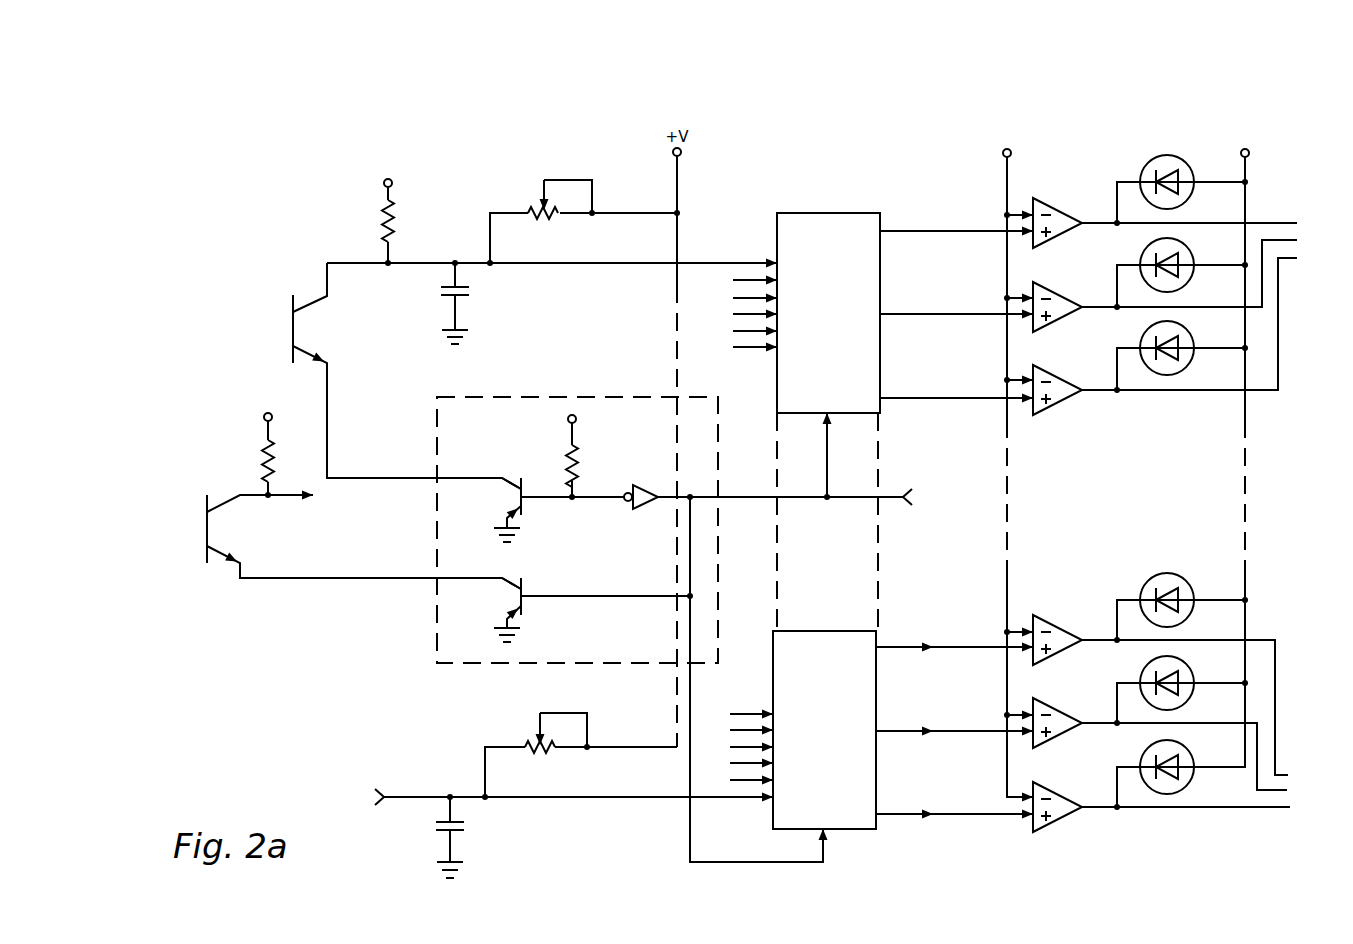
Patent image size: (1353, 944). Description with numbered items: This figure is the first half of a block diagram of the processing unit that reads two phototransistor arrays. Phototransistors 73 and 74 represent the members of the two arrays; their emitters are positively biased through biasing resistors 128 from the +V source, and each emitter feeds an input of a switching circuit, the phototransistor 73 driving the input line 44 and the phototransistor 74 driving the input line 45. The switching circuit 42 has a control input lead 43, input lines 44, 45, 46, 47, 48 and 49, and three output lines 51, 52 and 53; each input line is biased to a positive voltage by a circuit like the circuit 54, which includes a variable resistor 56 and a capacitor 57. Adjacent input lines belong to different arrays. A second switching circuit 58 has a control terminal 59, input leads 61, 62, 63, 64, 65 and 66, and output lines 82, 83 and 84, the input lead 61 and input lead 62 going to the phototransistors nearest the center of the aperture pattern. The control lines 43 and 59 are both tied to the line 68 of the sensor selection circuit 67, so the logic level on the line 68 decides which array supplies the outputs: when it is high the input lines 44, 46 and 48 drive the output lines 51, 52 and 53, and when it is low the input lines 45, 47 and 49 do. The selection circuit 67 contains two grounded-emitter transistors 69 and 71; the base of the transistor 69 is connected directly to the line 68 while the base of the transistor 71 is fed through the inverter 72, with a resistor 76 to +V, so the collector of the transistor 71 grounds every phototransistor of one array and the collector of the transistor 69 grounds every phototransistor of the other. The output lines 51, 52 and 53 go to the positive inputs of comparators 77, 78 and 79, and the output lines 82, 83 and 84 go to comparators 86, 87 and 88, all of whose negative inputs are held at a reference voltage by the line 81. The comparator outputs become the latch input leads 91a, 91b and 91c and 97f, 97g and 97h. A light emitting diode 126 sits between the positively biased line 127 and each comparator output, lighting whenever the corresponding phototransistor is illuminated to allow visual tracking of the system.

The biasing resistor 128 is at (384, 224).
The phototransistor 73 is at (283, 320).
The phototransistor 74 is at (194, 512).
The input line 45 is at (733, 280).
The biasing circuit 54 is at (533, 186).
The variable resistor 56 is at (545, 217).
The capacitor 57 is at (470, 291).
The input line 44 is at (743, 260).
The input line 46 is at (733, 298).
The input line 47 is at (733, 314).
The input line 48 is at (733, 331).
The input line 49 is at (733, 347).
The switching circuit 42 is at (820, 213).
The control input lead 43 is at (830, 434).
The output line 51 is at (913, 231).
The output line 52 is at (913, 314).
The output line 53 is at (913, 398).
The reference voltage line 81 is at (1006, 188).
The comparator 77 is at (1055, 215).
The comparator 78 is at (1063, 296).
The comparator 79 is at (1063, 380).
The light emitting diode 126 is at (1148, 164).
The positively biased line 127 is at (1250, 176).
The latch input lead 91a is at (1293, 222).
The latch input lead 91b is at (1293, 242).
The latch input lead 91c is at (1293, 262).
The sensor selection circuit 67 is at (437, 650).
The transistor 71 is at (517, 470).
The resistor 76 is at (565, 470).
The inverter 72 is at (640, 490).
The transistor 69 is at (509, 572).
The line 68 is at (803, 500).
The switching circuit 58 is at (826, 631).
The control terminal 59 is at (826, 852).
The input lead 61 is at (740, 798).
The input lead 62 is at (733, 781).
The input lead 63 is at (733, 763).
The input lead 64 is at (733, 745).
The input lead 65 is at (735, 727).
The input lead 66 is at (745, 713).
The output line 82 is at (911, 647).
The output line 83 is at (911, 731).
The output line 84 is at (911, 814).
The comparator 86 is at (1050, 626).
The comparator 87 is at (1050, 709).
The comparator 88 is at (1050, 792).
The latch input lead 97f is at (1292, 771).
The latch input lead 97g is at (1290, 789).
The latch input lead 97h is at (1292, 808).